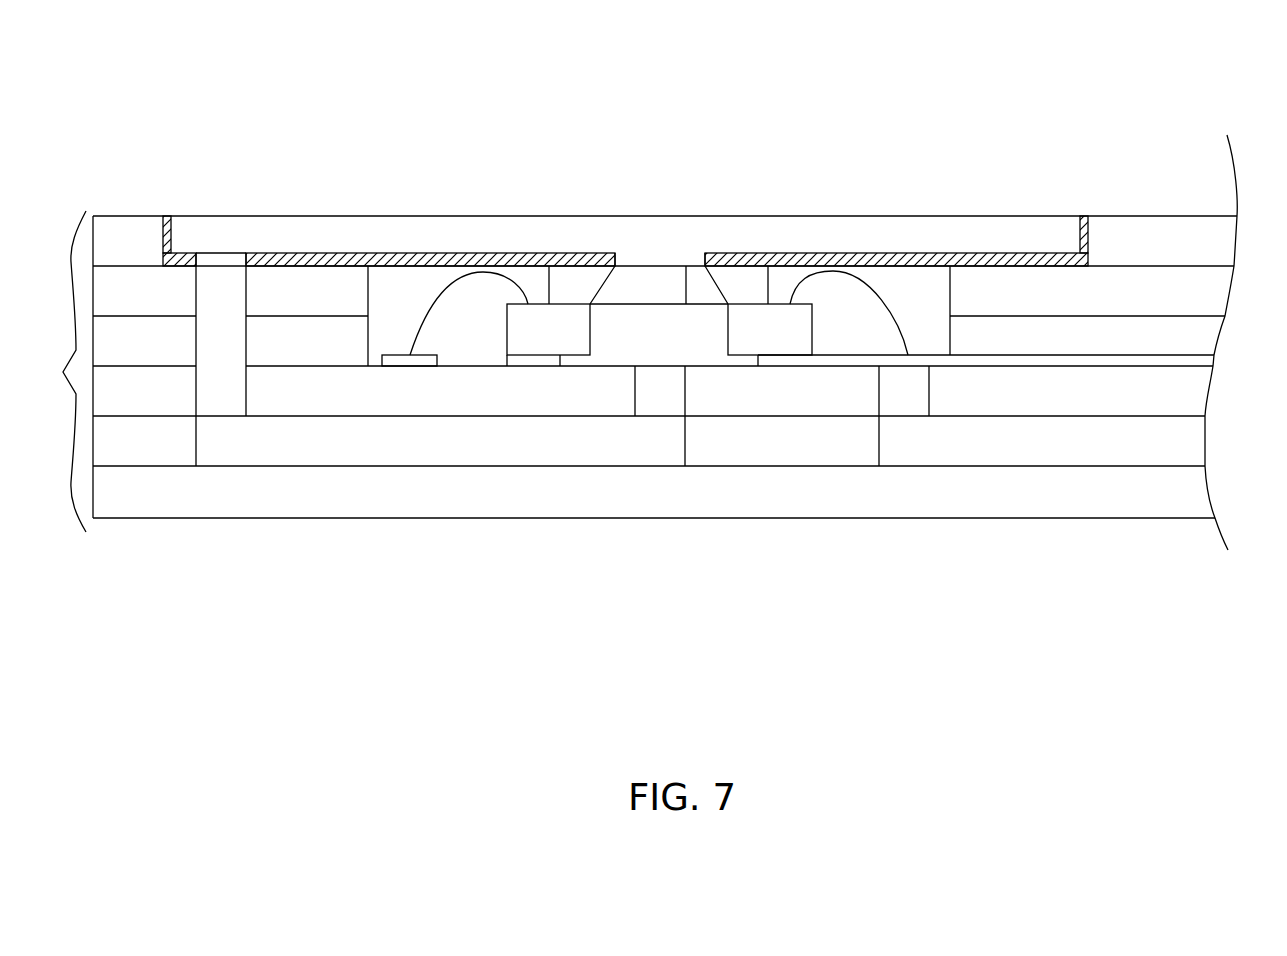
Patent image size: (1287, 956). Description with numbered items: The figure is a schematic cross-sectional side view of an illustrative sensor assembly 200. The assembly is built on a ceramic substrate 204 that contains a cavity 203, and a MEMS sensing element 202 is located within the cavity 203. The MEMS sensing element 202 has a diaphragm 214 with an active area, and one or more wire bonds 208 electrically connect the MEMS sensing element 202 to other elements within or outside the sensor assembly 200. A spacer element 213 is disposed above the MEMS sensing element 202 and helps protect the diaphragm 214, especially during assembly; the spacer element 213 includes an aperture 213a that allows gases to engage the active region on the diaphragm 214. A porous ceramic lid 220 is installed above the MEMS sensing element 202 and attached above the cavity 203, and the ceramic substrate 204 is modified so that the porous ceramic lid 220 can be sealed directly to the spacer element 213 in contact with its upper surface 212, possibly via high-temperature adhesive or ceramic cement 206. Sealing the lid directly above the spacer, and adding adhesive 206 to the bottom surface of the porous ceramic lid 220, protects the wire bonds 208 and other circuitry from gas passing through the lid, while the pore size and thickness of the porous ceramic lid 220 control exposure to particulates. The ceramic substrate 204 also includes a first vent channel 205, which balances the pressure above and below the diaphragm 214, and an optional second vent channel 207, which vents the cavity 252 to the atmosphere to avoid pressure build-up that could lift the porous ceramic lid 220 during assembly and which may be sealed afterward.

The sensor assembly 200 is at (183, 113).
The MEMS sensing element 202 is at (783, 302).
The cavity 203 is at (933, 268).
The ceramic substrate 204 is at (567, 395).
The first vent channel 205 is at (223, 440).
The adhesive 206 is at (345, 253).
The second vent channel 207 is at (1113, 449).
The wire bonds 208 is at (480, 268).
The upper surface 212 is at (655, 260).
The spacer element 213 is at (748, 260).
The aperture 213a is at (637, 260).
The diaphragm 214 is at (686, 266).
The porous ceramic lid 220 is at (555, 210).
The cavity 252 is at (935, 343).